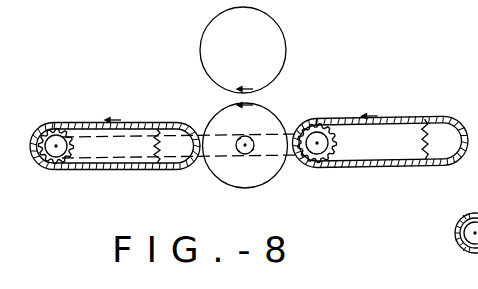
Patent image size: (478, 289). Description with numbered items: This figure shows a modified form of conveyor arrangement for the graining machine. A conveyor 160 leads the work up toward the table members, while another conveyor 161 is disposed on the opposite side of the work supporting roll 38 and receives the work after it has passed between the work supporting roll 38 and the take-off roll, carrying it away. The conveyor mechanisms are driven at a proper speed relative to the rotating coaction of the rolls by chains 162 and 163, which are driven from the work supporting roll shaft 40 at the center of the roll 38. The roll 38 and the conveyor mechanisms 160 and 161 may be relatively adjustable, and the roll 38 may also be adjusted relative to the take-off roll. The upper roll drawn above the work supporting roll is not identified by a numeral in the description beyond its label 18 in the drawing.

The roller 18 is at (222, 33).
The work supporting roll 38 is at (280, 168).
The work supporting roll shaft 40 is at (251, 142).
The conveyor 160 is at (383, 156).
The conveyor 161 is at (122, 170).
The chain 162 is at (285, 157).
The chain 163 is at (95, 167).